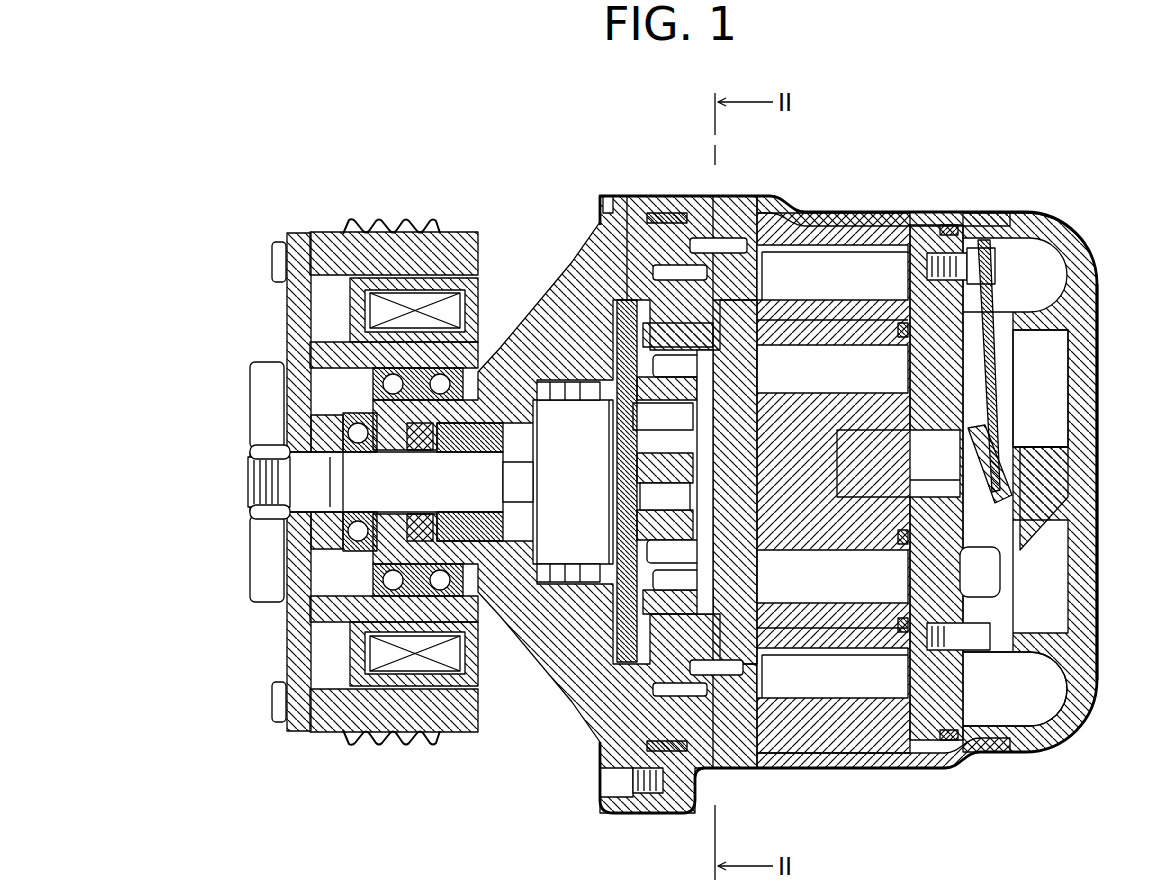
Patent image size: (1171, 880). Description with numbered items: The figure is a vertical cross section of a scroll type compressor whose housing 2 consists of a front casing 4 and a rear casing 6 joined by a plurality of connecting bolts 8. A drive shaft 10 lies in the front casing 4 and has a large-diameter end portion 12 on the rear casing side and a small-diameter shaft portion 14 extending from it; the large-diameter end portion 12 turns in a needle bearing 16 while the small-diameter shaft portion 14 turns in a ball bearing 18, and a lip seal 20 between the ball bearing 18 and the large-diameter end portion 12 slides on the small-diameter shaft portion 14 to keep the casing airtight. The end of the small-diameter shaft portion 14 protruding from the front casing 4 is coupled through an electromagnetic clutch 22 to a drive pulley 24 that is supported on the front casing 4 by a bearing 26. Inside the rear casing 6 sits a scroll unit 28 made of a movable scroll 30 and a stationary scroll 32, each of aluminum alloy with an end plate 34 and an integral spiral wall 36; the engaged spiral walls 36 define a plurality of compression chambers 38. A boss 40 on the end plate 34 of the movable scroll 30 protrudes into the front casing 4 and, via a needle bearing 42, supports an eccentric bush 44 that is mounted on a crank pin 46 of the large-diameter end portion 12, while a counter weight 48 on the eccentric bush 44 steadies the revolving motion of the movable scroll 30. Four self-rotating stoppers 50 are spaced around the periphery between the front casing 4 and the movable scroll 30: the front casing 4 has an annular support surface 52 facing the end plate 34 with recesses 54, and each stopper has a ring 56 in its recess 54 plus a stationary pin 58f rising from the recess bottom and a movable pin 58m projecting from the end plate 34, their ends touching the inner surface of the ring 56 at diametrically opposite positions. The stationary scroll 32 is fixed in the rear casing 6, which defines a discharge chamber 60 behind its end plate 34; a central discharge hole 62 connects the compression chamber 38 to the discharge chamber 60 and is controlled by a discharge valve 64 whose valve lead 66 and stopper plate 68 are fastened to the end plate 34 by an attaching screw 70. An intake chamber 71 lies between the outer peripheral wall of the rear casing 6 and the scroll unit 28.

The housing 2 is at (930, 150).
The front casing 4 is at (588, 243).
The rear casing 6 is at (946, 212).
The connecting bolts 8 is at (610, 780).
The drive shaft 10 is at (283, 428).
The large-diameter end portion 12 is at (585, 330).
The small-diameter shaft portion 14 is at (256, 480).
The needle bearing 16 is at (545, 600).
The ball bearing 18 is at (300, 528).
The lip seal 20 is at (503, 430).
The electromagnetic clutch 22 is at (258, 305).
The drive pulley 24 is at (440, 230).
The bearing 26 is at (405, 735).
The scroll unit 28 is at (820, 753).
The movable scroll 30 is at (830, 215).
The stationary scroll 32 is at (970, 702).
The end plate 34 is at (779, 200).
The spiral wall 36 is at (873, 727).
The compression chambers 38 is at (843, 386).
The boss 40 is at (625, 200).
The needle bearing 42 is at (615, 290).
The eccentric bush 44 is at (703, 522).
The crank pin 46 is at (572, 425).
The counter weight 48 is at (600, 672).
The self-rotating stoppers 50 is at (695, 225).
The annular support surface 52 is at (717, 727).
The recesses 54 is at (766, 283).
The ring 56 is at (700, 225).
The stationary pin 58f is at (660, 270).
The movable pin 58m is at (733, 212).
The discharge chamber 60 is at (1013, 520).
The discharge hole 62 is at (951, 470).
The discharge valve 64 is at (1022, 400).
The valve lead 66 is at (1000, 472).
The stopper plate 68 is at (1008, 367).
The attaching screw 70 is at (1005, 245).
The intake chamber 71 is at (820, 742).